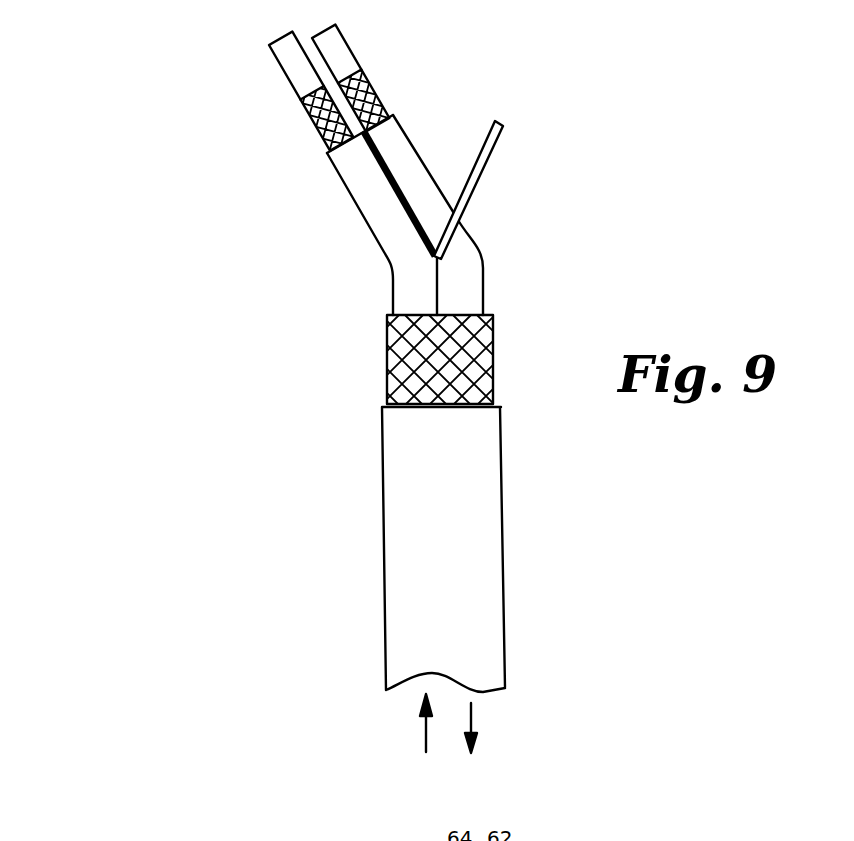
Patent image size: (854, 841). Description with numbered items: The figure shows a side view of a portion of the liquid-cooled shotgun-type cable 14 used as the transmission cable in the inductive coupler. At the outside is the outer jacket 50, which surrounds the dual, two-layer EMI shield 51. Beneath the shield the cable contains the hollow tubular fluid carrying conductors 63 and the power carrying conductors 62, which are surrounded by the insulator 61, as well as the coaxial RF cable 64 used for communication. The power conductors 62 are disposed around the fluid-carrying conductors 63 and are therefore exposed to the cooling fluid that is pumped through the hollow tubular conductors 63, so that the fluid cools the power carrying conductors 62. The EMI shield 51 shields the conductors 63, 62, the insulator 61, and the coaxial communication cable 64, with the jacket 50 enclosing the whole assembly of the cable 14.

The shotgun-type cable 14 is at (92, 113).
The outer jacket 50 is at (504, 547).
The dual EMI shield 51 is at (388, 362).
The insulator 61 is at (414, 146).
The power carrying conductors 62 is at (373, 89).
The hollow tubular fluid carrying conductors 63 is at (285, 75).
The coaxial RF cable 64 is at (485, 167).